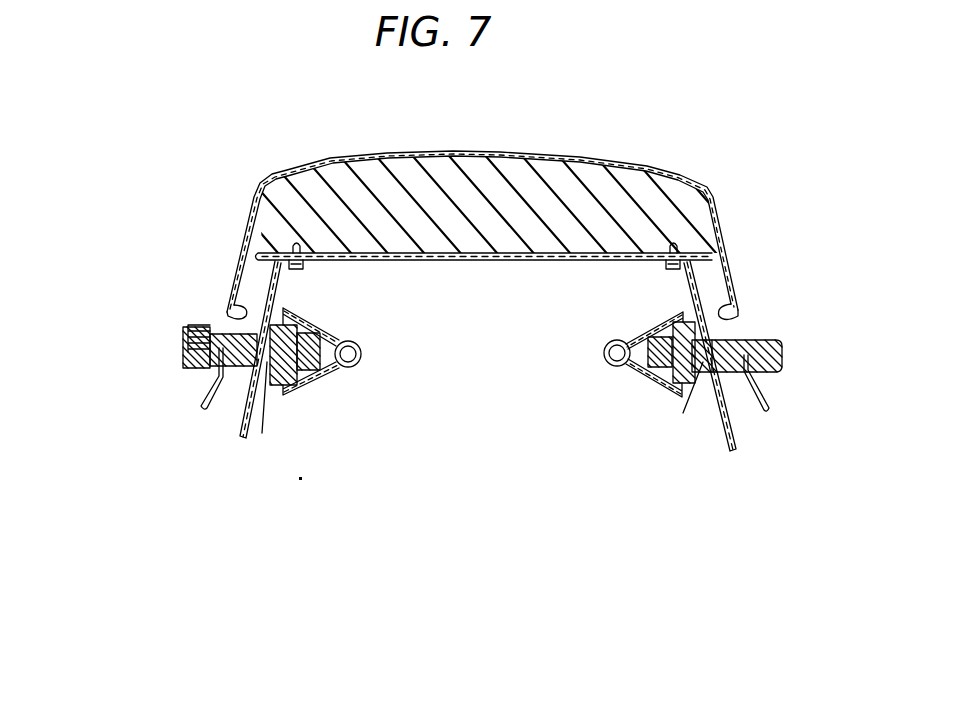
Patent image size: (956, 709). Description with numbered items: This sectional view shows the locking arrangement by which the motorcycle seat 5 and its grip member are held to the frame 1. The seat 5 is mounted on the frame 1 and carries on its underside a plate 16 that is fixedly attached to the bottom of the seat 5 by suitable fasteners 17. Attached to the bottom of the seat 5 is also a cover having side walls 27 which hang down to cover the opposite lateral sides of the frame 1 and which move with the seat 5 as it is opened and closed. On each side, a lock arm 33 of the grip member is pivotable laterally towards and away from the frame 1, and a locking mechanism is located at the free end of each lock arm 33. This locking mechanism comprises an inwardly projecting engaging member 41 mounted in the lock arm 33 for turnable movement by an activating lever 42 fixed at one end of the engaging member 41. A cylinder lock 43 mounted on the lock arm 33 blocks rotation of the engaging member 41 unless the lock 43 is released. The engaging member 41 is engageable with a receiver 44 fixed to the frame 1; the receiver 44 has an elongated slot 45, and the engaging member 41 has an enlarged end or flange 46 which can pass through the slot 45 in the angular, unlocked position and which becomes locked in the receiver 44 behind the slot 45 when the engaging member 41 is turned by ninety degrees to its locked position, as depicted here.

The frame 1 is at (363, 352).
The seat 5 is at (535, 158).
The plate 16 is at (516, 262).
The fasteners 17 is at (297, 270).
The side walls 27 is at (232, 418).
The lock arms 33 is at (185, 367).
The engaging member 41 is at (310, 333).
The activating lever 42 is at (200, 398).
The cylinder lock 43 is at (198, 323).
The receiver 44 is at (340, 322).
The elongated slot 45 is at (478, 413).
The flange 46 is at (315, 382).